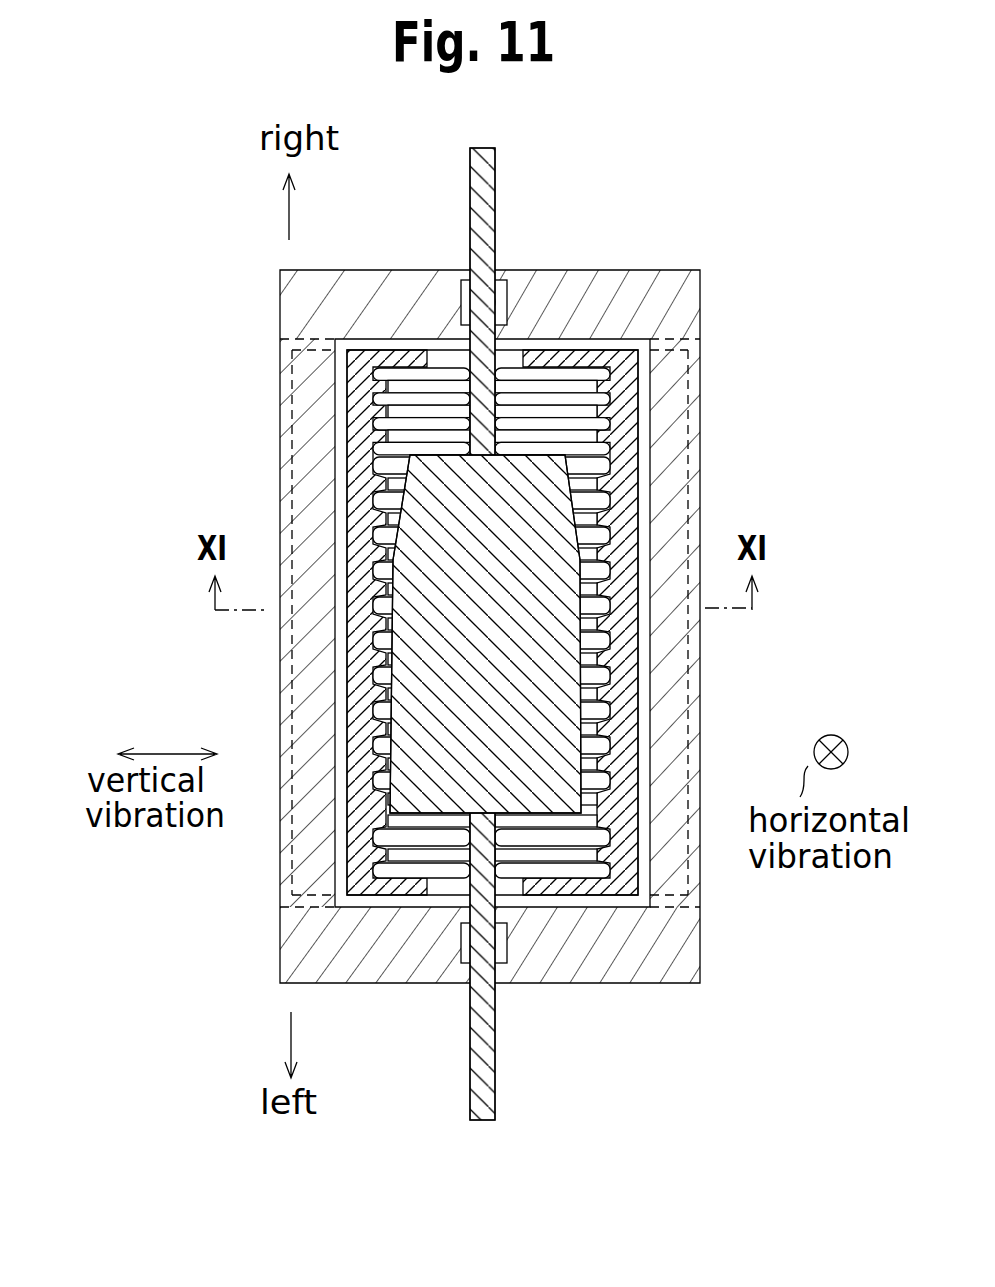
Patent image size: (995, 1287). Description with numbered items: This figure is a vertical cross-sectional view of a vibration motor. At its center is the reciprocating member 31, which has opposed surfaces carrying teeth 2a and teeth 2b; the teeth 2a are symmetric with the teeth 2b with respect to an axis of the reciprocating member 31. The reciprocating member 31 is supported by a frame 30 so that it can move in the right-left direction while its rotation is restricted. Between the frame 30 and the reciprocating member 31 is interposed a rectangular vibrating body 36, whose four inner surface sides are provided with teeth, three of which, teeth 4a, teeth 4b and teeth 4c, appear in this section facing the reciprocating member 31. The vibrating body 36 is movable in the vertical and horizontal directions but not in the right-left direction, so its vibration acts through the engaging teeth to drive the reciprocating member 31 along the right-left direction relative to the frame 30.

The frame 30 is at (703, 415).
The reciprocating member 31 is at (553, 543).
The vibrating body 36 is at (365, 688).
The teeth 2a is at (383, 535).
The teeth 2b is at (600, 677).
The teeth 4a is at (385, 490).
The teeth 4b is at (605, 622).
The teeth 4c is at (607, 373).